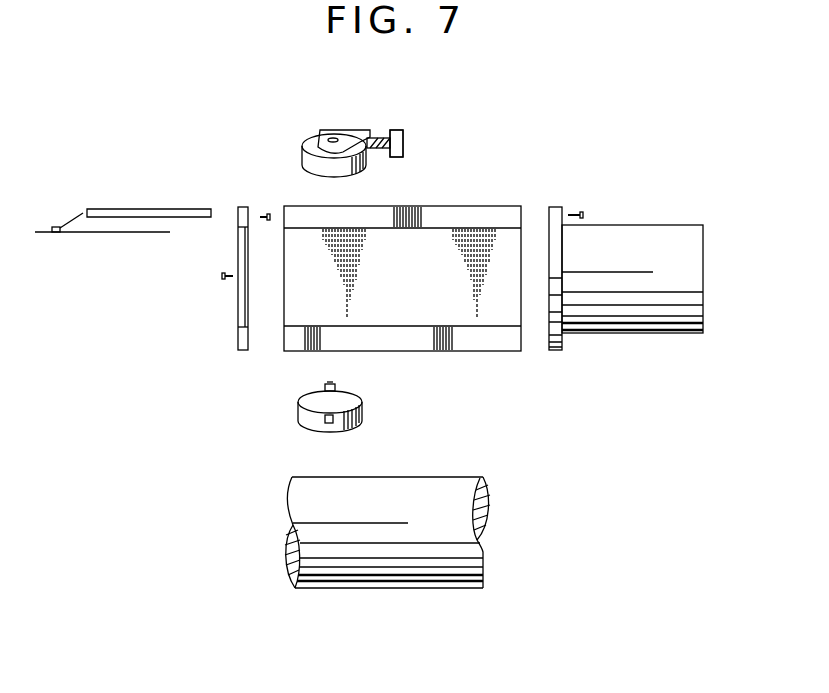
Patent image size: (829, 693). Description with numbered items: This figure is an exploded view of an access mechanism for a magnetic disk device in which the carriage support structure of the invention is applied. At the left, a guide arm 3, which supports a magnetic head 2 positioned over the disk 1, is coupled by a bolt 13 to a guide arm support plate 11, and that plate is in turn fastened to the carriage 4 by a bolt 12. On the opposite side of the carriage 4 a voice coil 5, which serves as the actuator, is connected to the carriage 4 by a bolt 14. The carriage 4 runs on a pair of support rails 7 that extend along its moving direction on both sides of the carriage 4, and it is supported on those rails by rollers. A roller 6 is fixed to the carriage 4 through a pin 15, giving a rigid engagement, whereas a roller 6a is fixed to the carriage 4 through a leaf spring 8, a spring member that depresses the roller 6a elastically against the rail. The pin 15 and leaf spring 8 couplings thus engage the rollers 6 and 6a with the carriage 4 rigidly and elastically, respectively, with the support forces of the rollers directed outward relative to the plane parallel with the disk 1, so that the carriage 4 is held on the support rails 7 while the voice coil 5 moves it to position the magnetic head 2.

The disk 1 is at (102, 234).
The magnetic head 2 is at (55, 226).
The guide arm 3 is at (153, 210).
The carriage 4 is at (477, 206).
The voice coil 5 is at (653, 225).
The roller 6 is at (363, 408).
The roller 6a is at (313, 136).
The support rail 7 is at (458, 477).
The leaf spring 8 is at (380, 137).
The guide arm support plate 11 is at (244, 207).
The bolt 12 is at (228, 272).
The bolt 13 is at (263, 222).
The bolt 14 is at (581, 210).
The pin 15 is at (337, 385).